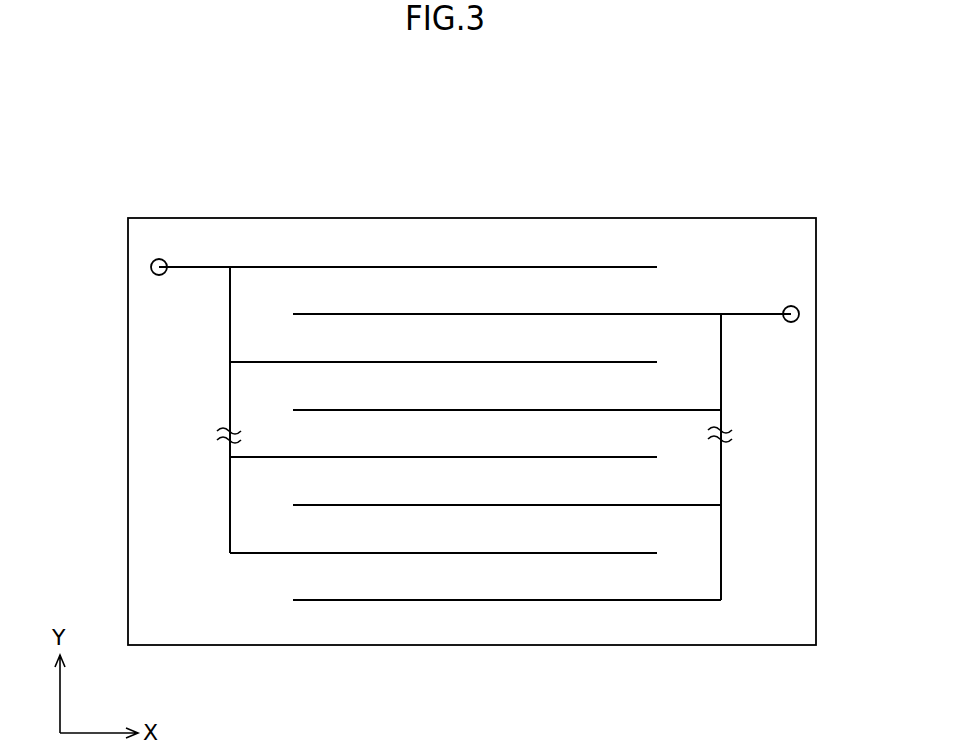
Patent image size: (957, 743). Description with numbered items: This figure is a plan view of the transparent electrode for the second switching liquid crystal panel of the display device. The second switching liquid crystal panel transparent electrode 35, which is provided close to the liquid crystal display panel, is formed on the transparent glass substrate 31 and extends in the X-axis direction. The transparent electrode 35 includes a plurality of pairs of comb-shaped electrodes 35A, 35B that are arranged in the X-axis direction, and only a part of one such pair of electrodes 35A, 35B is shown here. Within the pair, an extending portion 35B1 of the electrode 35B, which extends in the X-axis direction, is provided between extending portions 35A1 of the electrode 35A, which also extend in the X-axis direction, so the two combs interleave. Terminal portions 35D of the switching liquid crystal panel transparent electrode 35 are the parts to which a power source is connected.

The glass substrate 31 is at (525, 218).
The second switching liquid crystal panel transparent electrode 35 is at (719, 204).
The comb-shaped electrode 35A is at (230, 320).
The extending portion 35A1 is at (407, 362).
The comb-shaped electrode 35B is at (721, 541).
The extending portion 35B1 is at (490, 505).
The terminal portion 35D is at (161, 259).